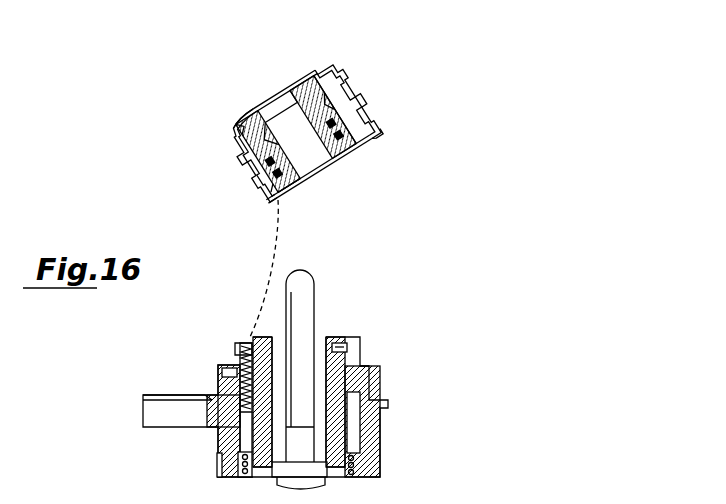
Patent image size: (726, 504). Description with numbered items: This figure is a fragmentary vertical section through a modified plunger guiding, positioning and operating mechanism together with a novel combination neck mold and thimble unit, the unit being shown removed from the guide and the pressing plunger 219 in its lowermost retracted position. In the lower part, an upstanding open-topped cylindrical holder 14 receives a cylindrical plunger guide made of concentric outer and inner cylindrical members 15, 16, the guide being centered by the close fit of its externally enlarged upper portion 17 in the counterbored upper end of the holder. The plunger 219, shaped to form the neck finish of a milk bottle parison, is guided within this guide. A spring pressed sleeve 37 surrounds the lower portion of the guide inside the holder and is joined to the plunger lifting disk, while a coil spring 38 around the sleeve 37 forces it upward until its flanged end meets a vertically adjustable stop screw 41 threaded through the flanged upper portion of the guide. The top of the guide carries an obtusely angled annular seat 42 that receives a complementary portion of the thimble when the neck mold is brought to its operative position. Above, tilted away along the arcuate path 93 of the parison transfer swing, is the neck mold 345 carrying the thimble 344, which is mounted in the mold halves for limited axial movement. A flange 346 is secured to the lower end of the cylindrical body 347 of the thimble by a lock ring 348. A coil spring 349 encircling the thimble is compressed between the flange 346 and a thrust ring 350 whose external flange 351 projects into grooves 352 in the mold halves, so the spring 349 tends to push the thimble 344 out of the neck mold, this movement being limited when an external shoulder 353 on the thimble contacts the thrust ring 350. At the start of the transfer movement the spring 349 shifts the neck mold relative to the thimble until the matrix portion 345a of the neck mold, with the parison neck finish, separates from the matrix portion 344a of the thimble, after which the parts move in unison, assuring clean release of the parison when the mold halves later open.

The cylindrical holder 14 is at (383, 427).
The outer cylindrical member 15 is at (342, 415).
The inner cylindrical member 16 is at (332, 370).
The externally enlarged upper portion 17 is at (370, 373).
The spring pressed sleeve 37 is at (250, 473).
The coil spring 38 is at (243, 463).
The stop screw 41 is at (245, 357).
The annular seat 42 is at (347, 338).
The arcuate path 93 is at (272, 255).
The pressing plunger 219 is at (300, 327).
The thimble 344 is at (258, 133).
The matrix portion of the thimble 344a is at (262, 122).
The neck mold 345 is at (330, 72).
The matrix portion of the neck mold 345a is at (260, 115).
The flange 346 is at (287, 193).
The cylindrical body 347 is at (343, 157).
The lock ring 348 is at (302, 185).
The coil spring 349 is at (253, 177).
The thrust ring 350 is at (260, 163).
The external flange 351 is at (350, 112).
The grooves 352 is at (330, 107).
The external shoulder 353 is at (340, 95).